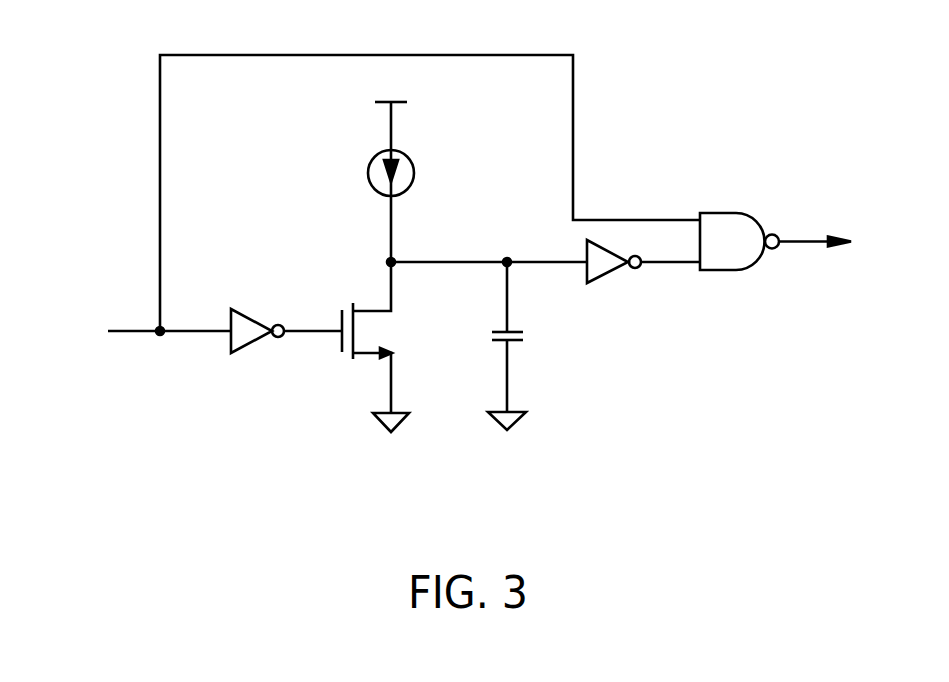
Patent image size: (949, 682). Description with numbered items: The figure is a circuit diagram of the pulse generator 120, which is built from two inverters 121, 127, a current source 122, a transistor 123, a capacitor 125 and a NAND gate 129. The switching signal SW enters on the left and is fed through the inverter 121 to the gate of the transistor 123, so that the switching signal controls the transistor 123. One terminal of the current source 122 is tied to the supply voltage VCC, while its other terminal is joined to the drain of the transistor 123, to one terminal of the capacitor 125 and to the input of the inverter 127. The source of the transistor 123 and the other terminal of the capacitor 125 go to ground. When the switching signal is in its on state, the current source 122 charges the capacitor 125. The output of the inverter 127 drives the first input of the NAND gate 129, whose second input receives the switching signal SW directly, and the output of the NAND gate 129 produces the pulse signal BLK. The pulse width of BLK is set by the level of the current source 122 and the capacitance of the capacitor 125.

The pulse generator 120 is at (855, 50).
The inverter 121 is at (286, 316).
The current source 122 is at (414, 182).
The transistor 123 is at (391, 347).
The capacitor 125 is at (531, 346).
The inverter 127 is at (643, 278).
The NAND gate 129 is at (739, 259).